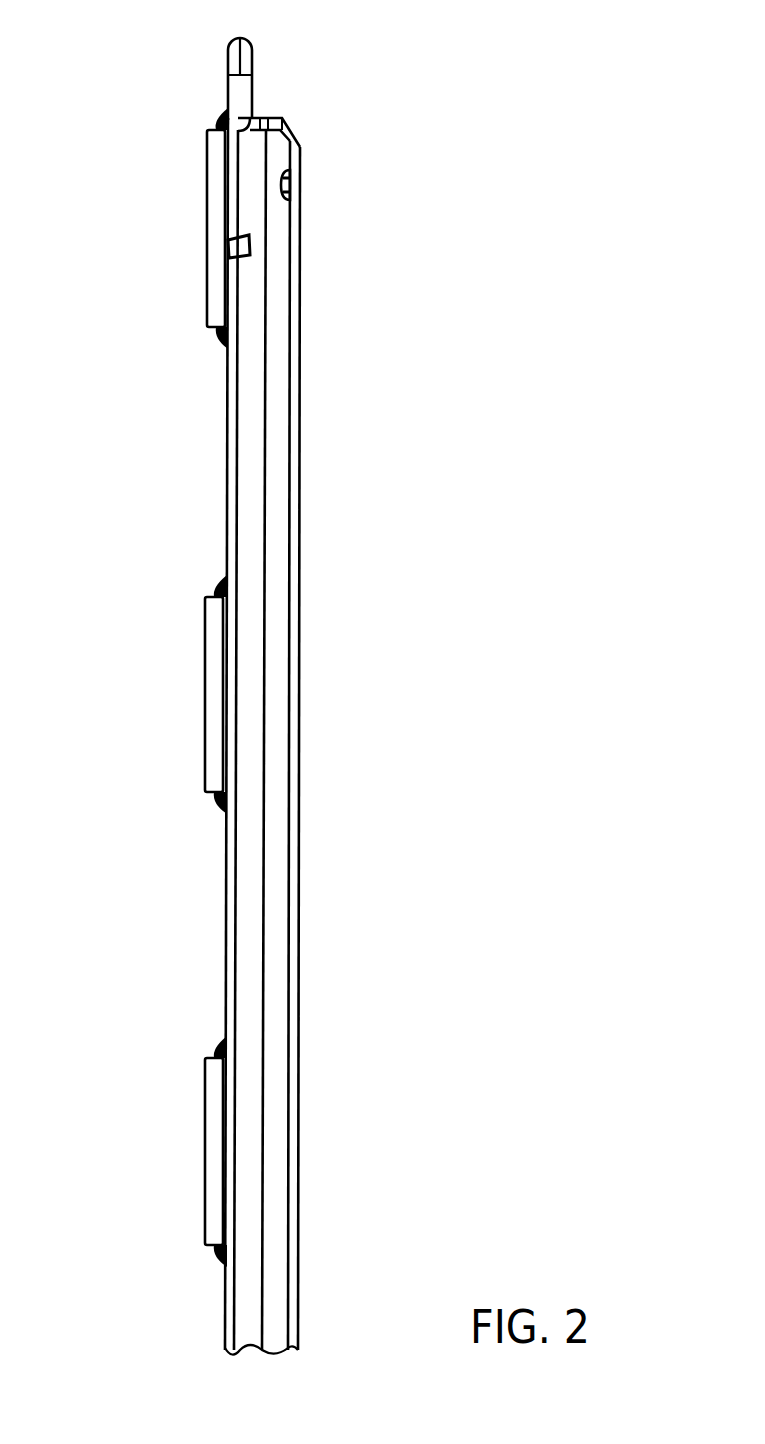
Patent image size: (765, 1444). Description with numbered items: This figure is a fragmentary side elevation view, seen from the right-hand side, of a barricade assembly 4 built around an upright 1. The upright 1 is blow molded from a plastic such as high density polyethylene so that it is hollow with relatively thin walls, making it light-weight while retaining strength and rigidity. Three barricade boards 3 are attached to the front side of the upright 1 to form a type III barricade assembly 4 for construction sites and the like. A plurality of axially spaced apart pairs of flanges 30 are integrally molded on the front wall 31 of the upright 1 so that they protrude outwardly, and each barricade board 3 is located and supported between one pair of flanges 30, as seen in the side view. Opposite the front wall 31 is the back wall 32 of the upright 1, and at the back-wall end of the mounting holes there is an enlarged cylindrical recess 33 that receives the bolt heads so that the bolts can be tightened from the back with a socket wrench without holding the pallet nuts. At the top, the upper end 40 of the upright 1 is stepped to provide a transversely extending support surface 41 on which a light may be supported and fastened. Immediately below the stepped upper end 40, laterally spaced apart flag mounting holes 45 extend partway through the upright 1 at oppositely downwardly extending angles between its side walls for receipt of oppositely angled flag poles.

The upright 1 is at (312, 420).
The barricade board 3 is at (212, 220).
The barricade assembly 4 is at (346, 118).
The flange 30 is at (215, 118).
The front wall 31 is at (225, 486).
The back wall 32 is at (300, 487).
The enlarged cylindrical recess 33 is at (252, 60).
The upper end 40 is at (283, 153).
The support surface 41 is at (268, 118).
The flag mounting hole 45 is at (298, 202).